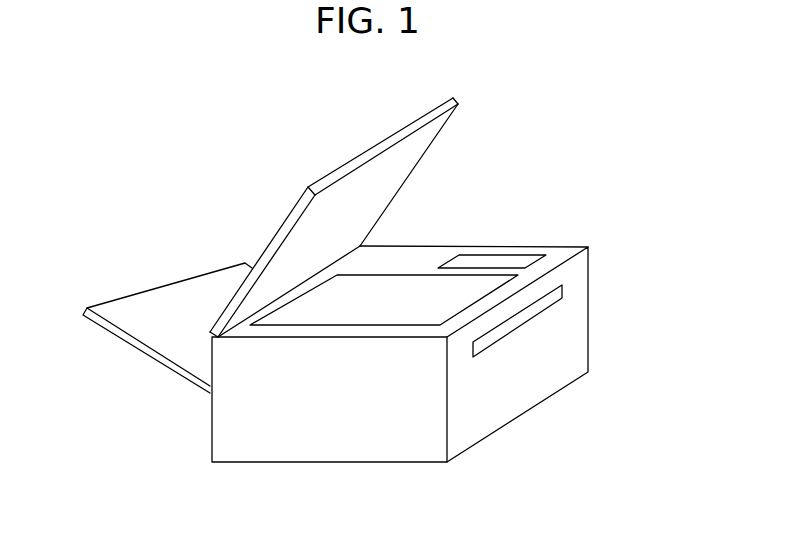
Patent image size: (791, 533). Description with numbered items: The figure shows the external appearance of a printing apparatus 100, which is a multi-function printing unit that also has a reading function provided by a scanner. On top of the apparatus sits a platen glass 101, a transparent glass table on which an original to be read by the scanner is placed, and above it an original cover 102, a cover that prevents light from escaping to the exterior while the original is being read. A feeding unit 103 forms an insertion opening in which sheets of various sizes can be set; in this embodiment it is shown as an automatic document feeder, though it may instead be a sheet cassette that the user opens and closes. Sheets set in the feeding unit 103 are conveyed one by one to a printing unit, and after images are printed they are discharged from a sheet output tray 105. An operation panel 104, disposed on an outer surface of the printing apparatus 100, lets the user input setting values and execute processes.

The printing apparatus 100 is at (263, 447).
The platen glass 101 is at (427, 268).
The original cover 102 is at (385, 143).
The feeding unit 103 is at (95, 307).
The operation panel 104 is at (530, 252).
The sheet output tray 105 is at (563, 291).